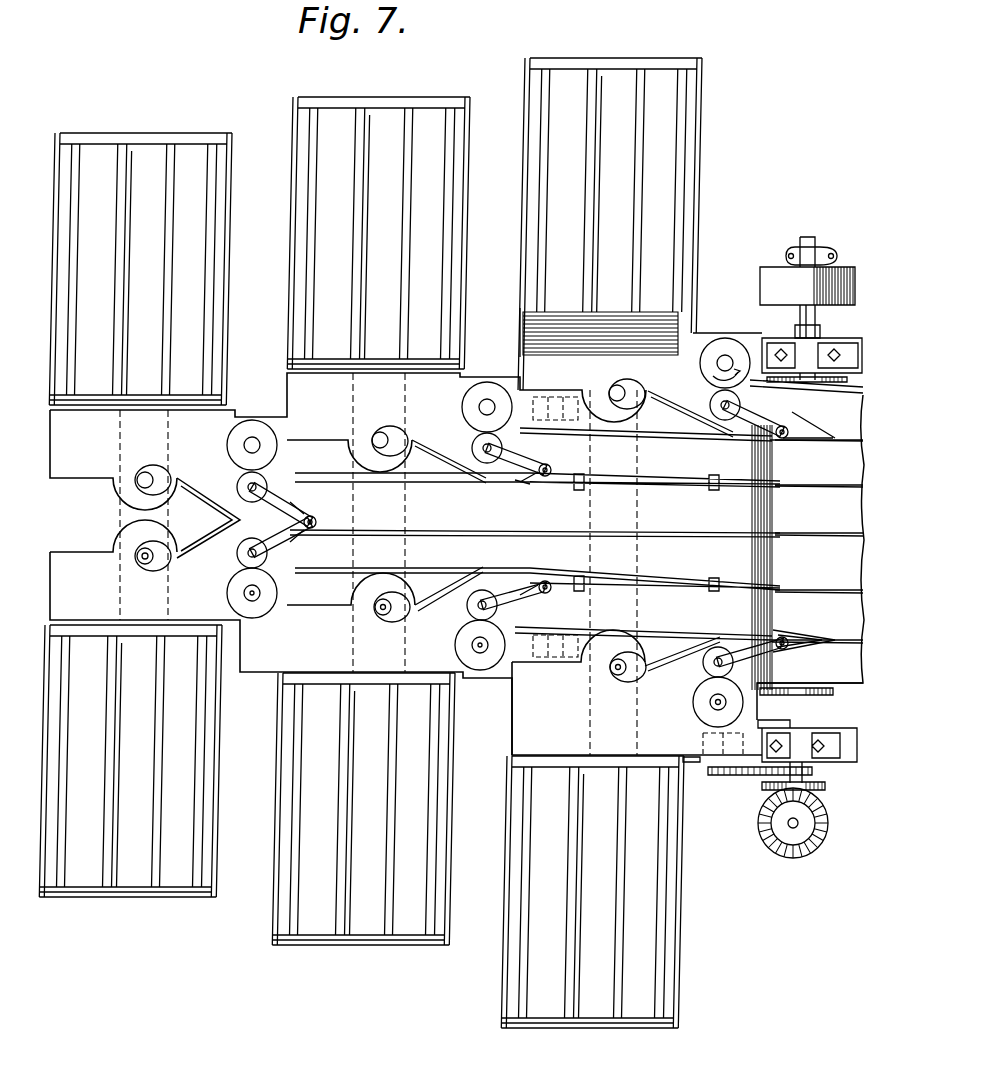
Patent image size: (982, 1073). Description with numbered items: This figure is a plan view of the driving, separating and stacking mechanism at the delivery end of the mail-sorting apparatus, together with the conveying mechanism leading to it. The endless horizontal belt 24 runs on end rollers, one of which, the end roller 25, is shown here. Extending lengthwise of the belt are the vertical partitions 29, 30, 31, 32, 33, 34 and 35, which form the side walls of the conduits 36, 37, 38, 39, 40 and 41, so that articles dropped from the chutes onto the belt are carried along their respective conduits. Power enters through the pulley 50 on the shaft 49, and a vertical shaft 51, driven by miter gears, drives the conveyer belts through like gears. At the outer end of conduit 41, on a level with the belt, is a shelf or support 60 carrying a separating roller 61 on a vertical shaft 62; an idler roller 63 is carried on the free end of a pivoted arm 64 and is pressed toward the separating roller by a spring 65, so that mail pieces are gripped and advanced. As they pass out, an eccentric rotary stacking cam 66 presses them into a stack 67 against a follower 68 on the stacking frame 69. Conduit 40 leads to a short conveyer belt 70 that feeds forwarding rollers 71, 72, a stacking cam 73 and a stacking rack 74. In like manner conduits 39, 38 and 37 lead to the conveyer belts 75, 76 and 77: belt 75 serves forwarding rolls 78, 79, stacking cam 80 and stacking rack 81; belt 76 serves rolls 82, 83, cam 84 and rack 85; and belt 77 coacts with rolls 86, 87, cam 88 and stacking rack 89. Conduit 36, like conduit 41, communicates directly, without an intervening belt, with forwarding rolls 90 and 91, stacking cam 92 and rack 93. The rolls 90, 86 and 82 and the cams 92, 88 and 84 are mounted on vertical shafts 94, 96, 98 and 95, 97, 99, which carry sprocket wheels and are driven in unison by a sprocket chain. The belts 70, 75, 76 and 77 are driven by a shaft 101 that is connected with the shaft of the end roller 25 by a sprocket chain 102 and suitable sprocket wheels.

The endless horizontal belt 24 is at (863, 395).
The end roller 25 is at (833, 696).
The vertical partition 29 is at (840, 655).
The vertical partition 30 is at (852, 643).
The vertical partition 31 is at (856, 593).
The vertical partition 32 is at (856, 545).
The vertical partition 33 is at (856, 492).
The vertical partition 34 is at (856, 446).
The vertical partition 35 is at (862, 400).
The conduit 36 is at (776, 653).
The conduit 37 is at (817, 617).
The conduit 38 is at (819, 571).
The conduit 39 is at (819, 516).
The conduit 40 is at (819, 468).
The conduit 41 is at (838, 400).
The shaft 49 is at (808, 237).
The pulley 50 is at (760, 272).
The vertical shaft 51 is at (793, 830).
The shelf or support 60 is at (716, 333).
The separating roller 61 is at (729, 347).
The vertical shaft 62 is at (718, 363).
The idler roller 63 is at (712, 405).
The pivoted arm 64 is at (806, 388).
The spring 65 is at (735, 433).
The eccentric rotary stacking cam 66 is at (612, 385).
The stack 67 is at (522, 337).
The follower 68 is at (610, 312).
The stacking frame 69 is at (607, 55).
The short conveyer belt 70 is at (646, 450).
The forwarding roller 71 is at (462, 404).
The forwarding roller 72 is at (472, 446).
The stacking cam 73 is at (381, 432).
The stacking rack 74 is at (392, 88).
The conveyer belt 75 is at (537, 497).
The conveyer belt 76 is at (535, 560).
The conveyer belt 77 is at (643, 617).
The forwarding roll 78 is at (227, 443).
The forwarding roll 79 is at (237, 485).
The stacking cam 80 is at (146, 472).
The stacking rack 81 is at (147, 134).
The forwarding roll 82 is at (231, 593).
The forwarding roll 83 is at (237, 553).
The stacking cam 84 is at (150, 571).
The stacking rack 85 is at (127, 894).
The forwarding roll 86 is at (455, 646).
The forwarding roll 87 is at (467, 605).
The stacking cam 88 is at (382, 620).
The stacking rack 89 is at (362, 947).
The forwarding roll 90 is at (693, 702).
The forwarding roll 91 is at (703, 663).
The stacking cam 92 is at (616, 685).
The stacking rack 93 is at (578, 1028).
The vertical shaft 94 is at (716, 704).
The vertical shaft 95 is at (610, 668).
The vertical shaft 96 is at (481, 655).
The vertical shaft 97 is at (378, 608).
The vertical shaft 98 is at (252, 600).
The vertical shaft 99 is at (140, 557).
The shaft 101 is at (703, 762).
The sprocket chain 102 is at (746, 776).